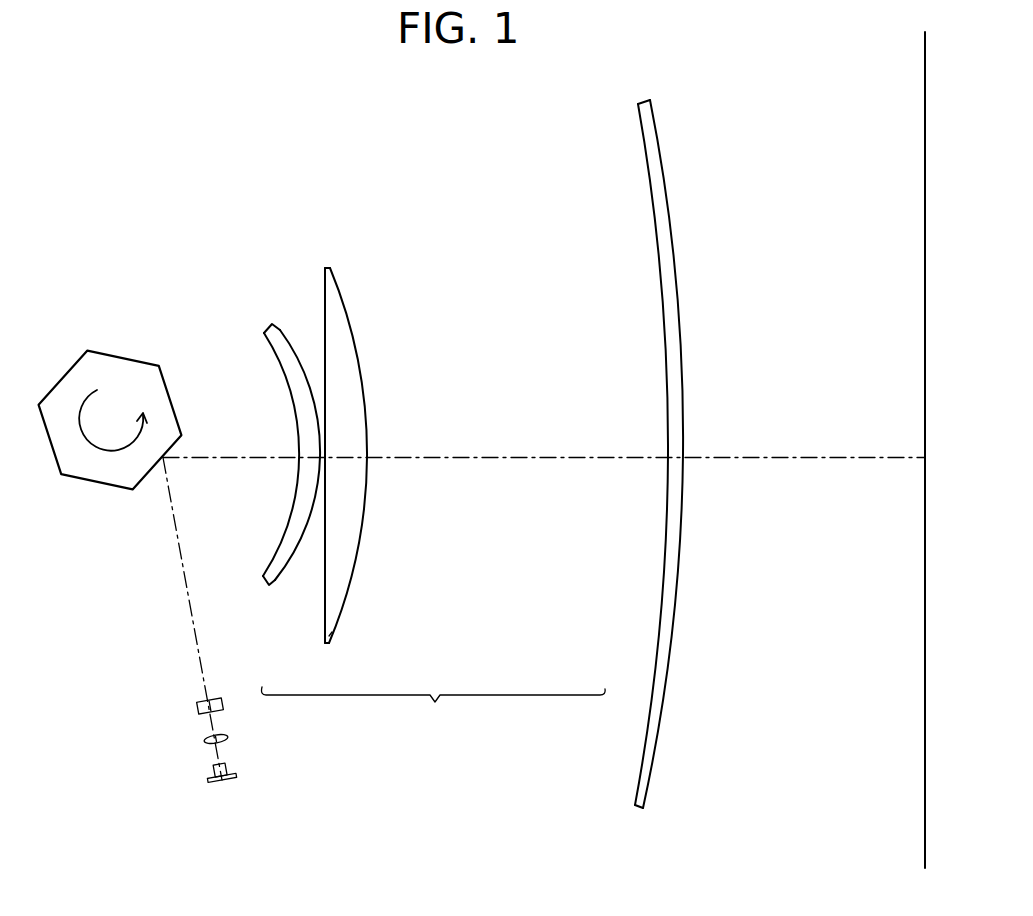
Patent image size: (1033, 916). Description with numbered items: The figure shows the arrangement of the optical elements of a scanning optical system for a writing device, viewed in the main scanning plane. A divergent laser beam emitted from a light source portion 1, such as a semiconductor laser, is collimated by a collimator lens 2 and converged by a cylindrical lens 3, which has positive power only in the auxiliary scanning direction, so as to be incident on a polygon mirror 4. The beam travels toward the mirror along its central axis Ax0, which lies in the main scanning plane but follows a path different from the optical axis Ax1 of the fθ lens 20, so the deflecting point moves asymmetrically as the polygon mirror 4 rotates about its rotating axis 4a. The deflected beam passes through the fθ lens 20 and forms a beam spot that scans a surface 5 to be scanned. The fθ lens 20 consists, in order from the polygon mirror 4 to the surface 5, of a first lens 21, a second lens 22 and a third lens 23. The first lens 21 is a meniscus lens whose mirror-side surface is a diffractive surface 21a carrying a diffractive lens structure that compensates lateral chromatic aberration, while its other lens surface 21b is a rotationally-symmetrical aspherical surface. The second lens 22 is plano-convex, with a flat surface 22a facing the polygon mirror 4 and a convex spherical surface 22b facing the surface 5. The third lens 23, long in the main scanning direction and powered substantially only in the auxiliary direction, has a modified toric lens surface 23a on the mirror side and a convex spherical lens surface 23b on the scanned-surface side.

The light source portion 1 is at (213, 777).
The collimator lens 2 is at (203, 742).
The cylindrical lens 3 is at (200, 707).
The polygon mirror 4 is at (110, 430).
The rotating axis 4a is at (111, 418).
The surface to be scanned 5 is at (923, 705).
The fθ lens 20 is at (400, 451).
The first lens 21 is at (207, 465).
The diffractive surface 21a is at (263, 337).
The lens surface 21b is at (283, 332).
The second lens 22 is at (350, 482).
The flat surface 22a is at (325, 313).
The convex spherical surface 22b is at (355, 343).
The third lens 23 is at (642, 451).
The lens surface 23a is at (642, 135).
The lens surface 23b is at (655, 133).
The central axis of the incident beam Ax0 is at (192, 628).
The optical axis of the fθ lens Ax1 is at (773, 454).